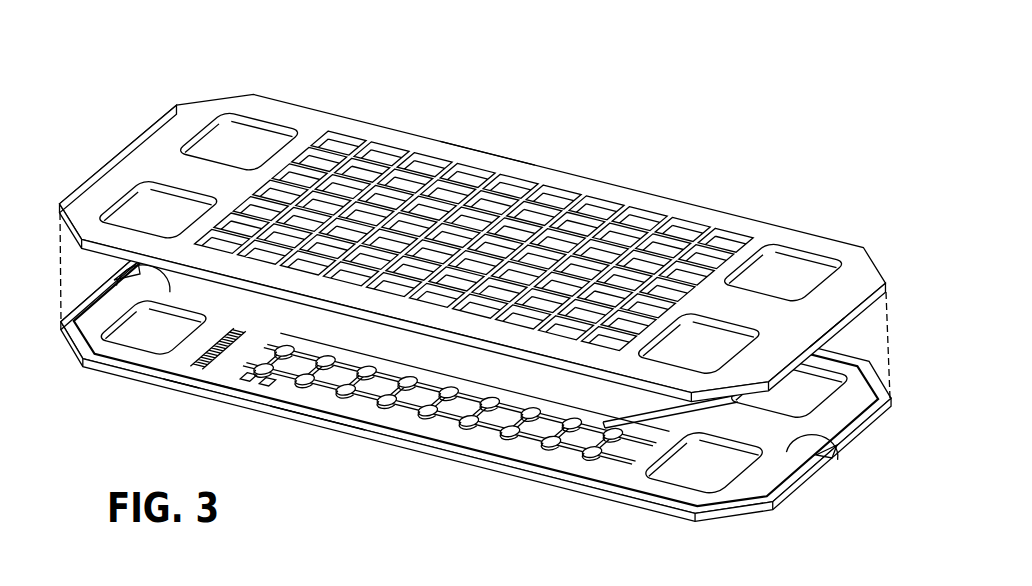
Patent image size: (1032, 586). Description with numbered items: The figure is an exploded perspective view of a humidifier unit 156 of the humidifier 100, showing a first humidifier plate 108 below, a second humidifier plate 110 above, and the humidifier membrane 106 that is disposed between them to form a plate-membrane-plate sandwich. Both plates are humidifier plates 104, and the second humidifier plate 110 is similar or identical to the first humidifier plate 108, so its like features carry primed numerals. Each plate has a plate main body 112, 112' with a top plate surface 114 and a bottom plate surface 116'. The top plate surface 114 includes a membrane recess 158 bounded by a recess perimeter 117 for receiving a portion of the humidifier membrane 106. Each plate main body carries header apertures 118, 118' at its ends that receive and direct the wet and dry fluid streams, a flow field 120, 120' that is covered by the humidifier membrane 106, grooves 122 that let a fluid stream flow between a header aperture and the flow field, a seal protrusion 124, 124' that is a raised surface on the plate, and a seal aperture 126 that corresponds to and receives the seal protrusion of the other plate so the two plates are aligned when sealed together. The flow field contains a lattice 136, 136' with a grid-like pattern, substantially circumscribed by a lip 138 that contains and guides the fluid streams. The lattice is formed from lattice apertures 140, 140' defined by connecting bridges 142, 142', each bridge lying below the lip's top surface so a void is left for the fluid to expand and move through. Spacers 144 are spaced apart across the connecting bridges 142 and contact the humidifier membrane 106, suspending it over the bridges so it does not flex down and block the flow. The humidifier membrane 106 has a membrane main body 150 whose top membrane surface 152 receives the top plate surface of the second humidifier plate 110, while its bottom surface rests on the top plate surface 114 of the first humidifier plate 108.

The humidifier 100 is at (475, 257).
The humidifier unit 156 is at (807, 204).
The humidifier plate 104 is at (475, 266).
The second humidifier plate 110 is at (193, 103).
The first humidifier plate 108 is at (130, 379).
The humidifier membrane 106 is at (588, 428).
The membrane main body 150 is at (653, 479).
The plate main body 112 is at (390, 475).
The plate main body 112' is at (487, 126).
The top plate surface 114 is at (101, 334).
The bottom plate surface 116' is at (650, 182).
The recess perimeter 117 is at (180, 388).
The header aperture 118 is at (474, 391).
The header aperture 118' is at (470, 210).
The flow field 120 is at (254, 410).
The lattice 136 is at (256, 423).
The flow field 120' is at (696, 193).
The lattice 136' is at (684, 212).
The groove 122 is at (203, 347).
The seal protrusion 124 is at (92, 271).
The seal protrusion 124' is at (874, 337).
The seal aperture 126 is at (814, 456).
The lip 138 is at (313, 400).
The lattice aperture 140 is at (438, 423).
The lattice aperture 140' is at (473, 221).
The connecting bridge 142 is at (437, 437).
The connecting bridge 142' is at (598, 176).
The spacer 144 is at (421, 418).
The top membrane surface 152 is at (605, 406).
The membrane recess 158 is at (220, 391).